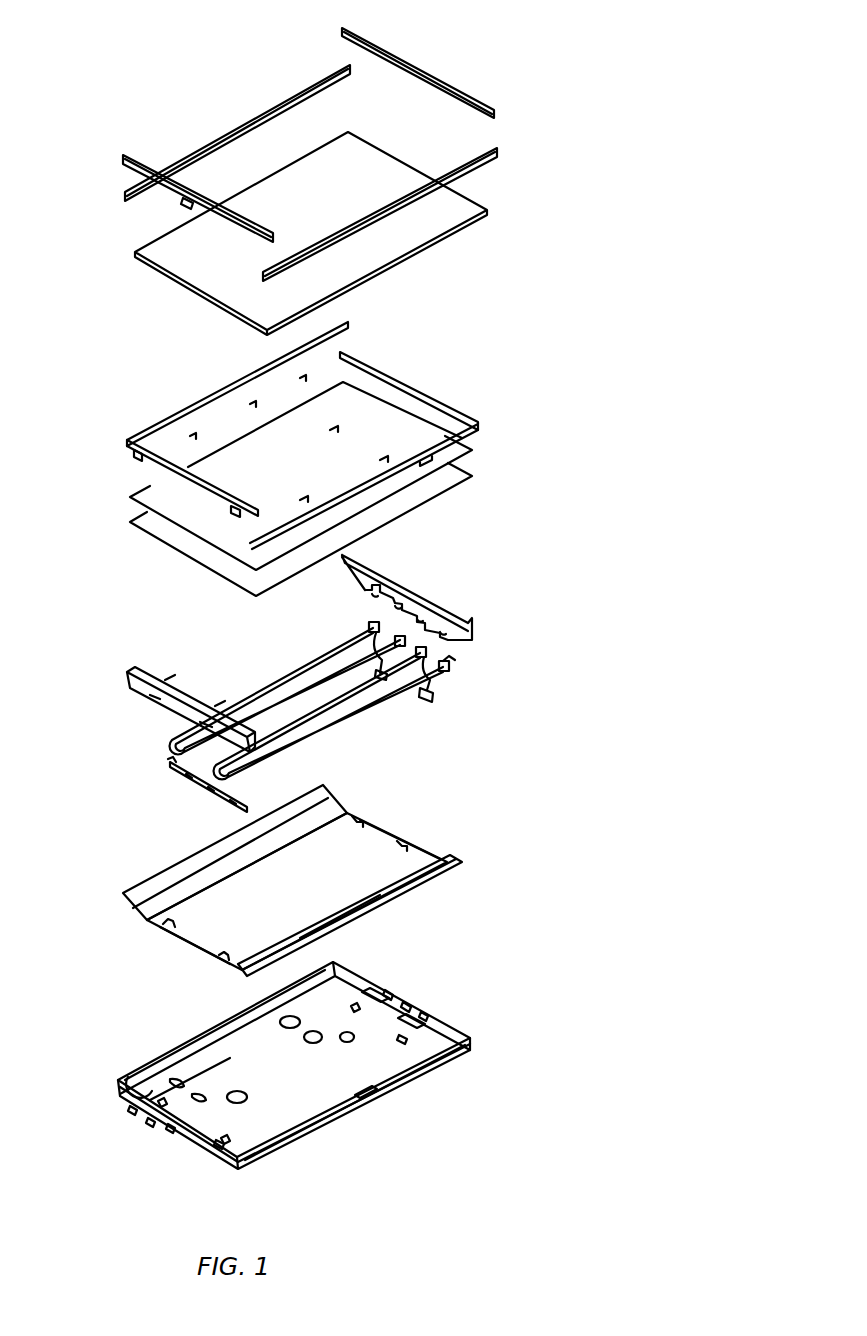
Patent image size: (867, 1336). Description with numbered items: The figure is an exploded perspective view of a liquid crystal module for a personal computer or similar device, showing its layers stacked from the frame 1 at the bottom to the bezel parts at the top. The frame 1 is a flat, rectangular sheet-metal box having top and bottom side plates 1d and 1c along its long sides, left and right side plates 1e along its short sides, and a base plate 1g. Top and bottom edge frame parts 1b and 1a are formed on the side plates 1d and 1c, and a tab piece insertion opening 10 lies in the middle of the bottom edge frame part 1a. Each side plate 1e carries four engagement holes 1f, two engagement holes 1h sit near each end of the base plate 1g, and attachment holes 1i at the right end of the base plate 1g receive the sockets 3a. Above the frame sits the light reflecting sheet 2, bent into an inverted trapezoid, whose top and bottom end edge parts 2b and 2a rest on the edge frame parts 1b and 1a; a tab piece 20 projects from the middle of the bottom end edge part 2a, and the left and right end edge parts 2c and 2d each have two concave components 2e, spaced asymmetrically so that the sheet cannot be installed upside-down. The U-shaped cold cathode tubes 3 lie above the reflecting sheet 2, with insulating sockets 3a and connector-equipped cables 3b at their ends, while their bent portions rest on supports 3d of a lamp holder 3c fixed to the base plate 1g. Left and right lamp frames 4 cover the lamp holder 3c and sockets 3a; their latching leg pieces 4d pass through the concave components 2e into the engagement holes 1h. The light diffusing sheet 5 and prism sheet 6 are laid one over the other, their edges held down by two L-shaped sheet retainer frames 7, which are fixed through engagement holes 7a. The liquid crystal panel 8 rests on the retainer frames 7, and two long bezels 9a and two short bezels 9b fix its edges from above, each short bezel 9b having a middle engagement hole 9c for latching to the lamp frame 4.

The frame 1 is at (432, 1094).
The bottom edge frame part 1a is at (303, 1123).
The top edge frame part 1b is at (152, 1062).
The bottom side plate 1c is at (272, 1113).
The top side plate 1d is at (117, 1082).
The left and right side plates 1e is at (423, 1015).
The engagement holes 1f is at (407, 1007).
The base plate 1g is at (220, 1063).
The engagement holes 1h is at (403, 1038).
The attachment holes 1i is at (427, 1022).
The tab piece insertion opening 10 is at (363, 1107).
The light reflecting sheet 2 is at (320, 855).
The bottom end edge part 2a is at (440, 870).
The top end edge part 2b is at (153, 893).
The left end edge part 2c is at (183, 943).
The right end edge part 2d is at (390, 833).
The concave components 2e is at (360, 827).
The tab piece 20 is at (360, 920).
The cold cathode tubes 3 is at (280, 680).
The sockets 3a is at (462, 656).
The cables 3b is at (440, 688).
The lamp holder 3c is at (225, 790).
The supports 3d is at (173, 765).
The lamp frames 4 is at (423, 595).
The latching leg pieces 4d is at (373, 597).
The light diffusing sheet 5 is at (162, 537).
The prism sheet 6 is at (147, 498).
The sheet retainer frames 7 is at (215, 395).
The engagement holes 7a is at (133, 453).
The liquid crystal panel 8 is at (407, 240).
The long bezels 9a is at (243, 125).
The short bezels 9b is at (417, 62).
The middle engagement hole 9c is at (187, 203).